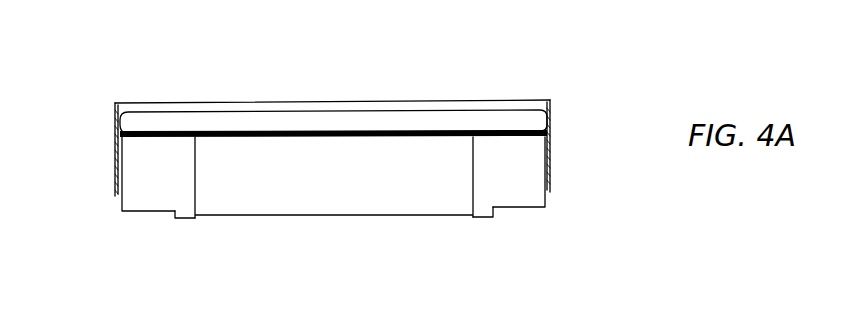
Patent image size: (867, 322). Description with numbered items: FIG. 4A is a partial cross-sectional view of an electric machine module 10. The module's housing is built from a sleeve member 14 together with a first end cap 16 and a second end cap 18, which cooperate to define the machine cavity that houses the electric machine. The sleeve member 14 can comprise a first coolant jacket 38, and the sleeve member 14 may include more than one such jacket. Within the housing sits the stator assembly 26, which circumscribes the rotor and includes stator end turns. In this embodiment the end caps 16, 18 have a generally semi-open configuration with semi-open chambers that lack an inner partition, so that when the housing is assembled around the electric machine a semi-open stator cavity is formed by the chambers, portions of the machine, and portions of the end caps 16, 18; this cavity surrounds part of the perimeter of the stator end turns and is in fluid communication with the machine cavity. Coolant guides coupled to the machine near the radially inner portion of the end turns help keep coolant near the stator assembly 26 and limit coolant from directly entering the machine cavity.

The electric machine module 10 is at (497, 48).
The sleeve member 14 is at (190, 103).
The first end cap 16 is at (553, 122).
The second end cap 18 is at (113, 137).
The stator assembly 26 is at (340, 190).
The first coolant jacket 38 is at (345, 124).